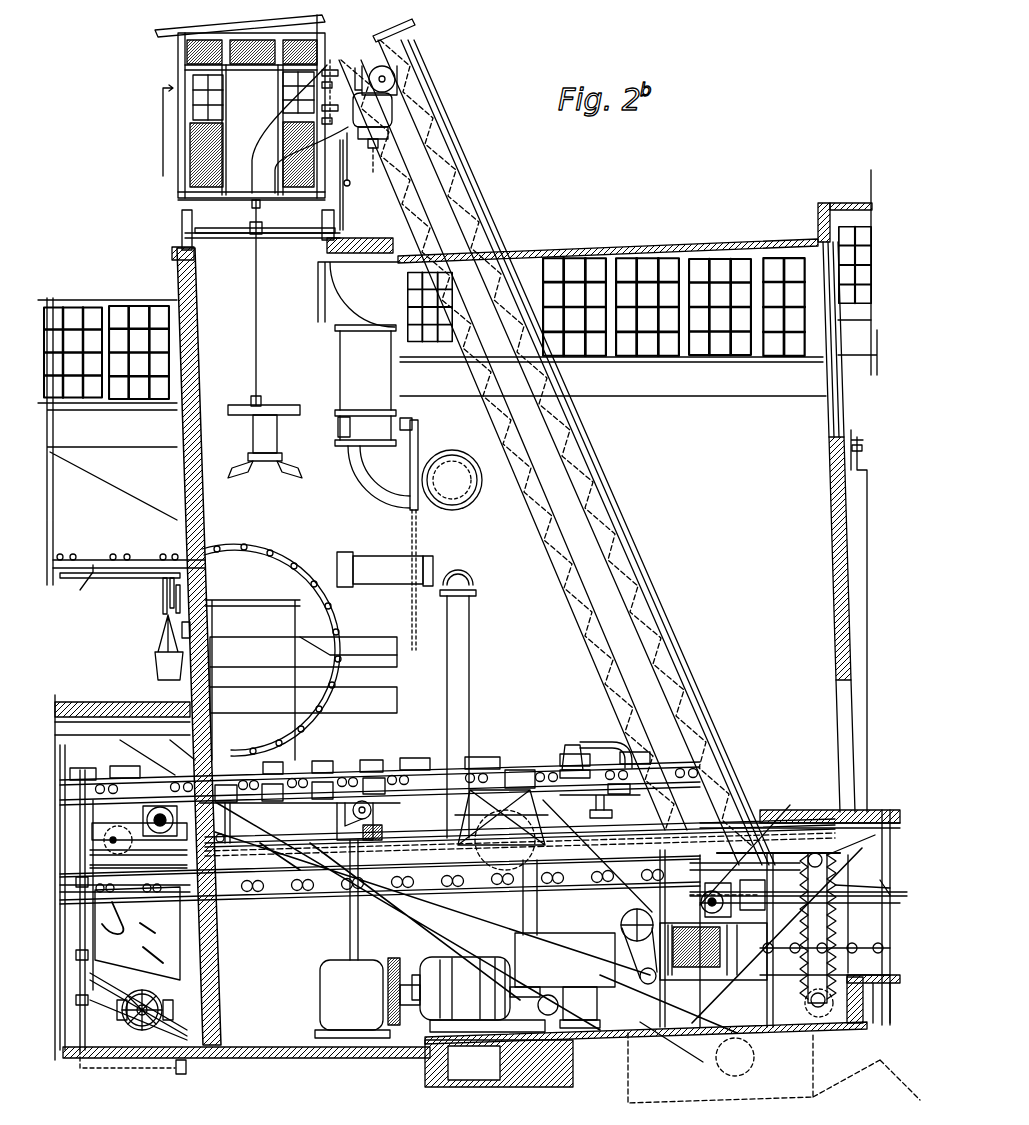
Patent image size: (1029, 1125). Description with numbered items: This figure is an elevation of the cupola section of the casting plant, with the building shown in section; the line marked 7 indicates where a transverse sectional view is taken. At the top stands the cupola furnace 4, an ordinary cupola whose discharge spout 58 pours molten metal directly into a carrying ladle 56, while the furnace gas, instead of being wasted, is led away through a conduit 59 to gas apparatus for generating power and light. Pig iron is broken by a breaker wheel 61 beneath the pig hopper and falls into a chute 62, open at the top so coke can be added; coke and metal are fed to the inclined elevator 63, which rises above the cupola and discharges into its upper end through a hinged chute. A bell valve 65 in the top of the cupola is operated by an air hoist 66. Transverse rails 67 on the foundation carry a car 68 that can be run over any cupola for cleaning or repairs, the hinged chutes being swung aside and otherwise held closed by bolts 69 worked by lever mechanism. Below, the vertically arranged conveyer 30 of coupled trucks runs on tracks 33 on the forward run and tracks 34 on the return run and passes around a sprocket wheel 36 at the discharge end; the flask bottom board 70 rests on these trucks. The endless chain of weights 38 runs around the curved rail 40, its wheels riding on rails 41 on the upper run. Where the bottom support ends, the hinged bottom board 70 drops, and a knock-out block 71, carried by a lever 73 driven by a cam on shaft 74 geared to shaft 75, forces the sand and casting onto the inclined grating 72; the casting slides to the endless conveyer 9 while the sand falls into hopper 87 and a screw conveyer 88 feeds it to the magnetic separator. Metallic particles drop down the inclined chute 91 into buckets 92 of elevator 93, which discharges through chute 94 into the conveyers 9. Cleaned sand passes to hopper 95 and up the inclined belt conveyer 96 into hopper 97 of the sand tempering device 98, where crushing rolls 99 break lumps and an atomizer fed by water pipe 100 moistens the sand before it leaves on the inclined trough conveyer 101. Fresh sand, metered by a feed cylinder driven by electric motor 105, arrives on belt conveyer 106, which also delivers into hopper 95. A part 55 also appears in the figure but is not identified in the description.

The cupola furnace 4 is at (275, 517).
The section line 7 is at (150, 72).
The endless conveyers 9 is at (876, 995).
The vertically arranged conveyer 30 is at (405, 768).
The tracks 33 is at (300, 796).
The tracks 34 is at (447, 858).
The sprocket wheel 36 is at (468, 816).
The endless chain of weights 38 is at (135, 558).
The curved rail 40 is at (271, 650).
The rails 41 is at (120, 585).
The switch plates 55 is at (162, 599).
The carrying ladle 56 is at (157, 657).
The discharge spout 58 is at (190, 641).
The conduit 59 is at (400, 550).
The breaker wheel 61 is at (888, 888).
The chute 62 is at (316, 134).
The inclined elevator 63 is at (340, 92).
The bell valve 65 is at (306, 232).
The air hoist 66 is at (270, 418).
The transverse rails 67 is at (176, 252).
The car 68 is at (193, 164).
The bolts 69 is at (360, 70).
The bottom board 70 is at (449, 782).
The knock-out block 71 is at (568, 745).
The grating 72 is at (602, 828).
The lever 73 is at (612, 744).
The shaft 74 is at (520, 822).
The shaft 75 is at (602, 832).
The hopper 87 is at (666, 890).
The screw conveyer 88 is at (622, 921).
The inclined chute 91 is at (808, 1005).
The buckets 92 is at (870, 975).
The elevator 93 is at (798, 913).
The chute 94 is at (848, 850).
The hopper 95 is at (617, 976).
The inclined endless belt conveyer 96 is at (700, 1072).
The hopper 97 is at (146, 822).
The sand tempering device 98 is at (125, 932).
The crushing rolls 99 is at (92, 833).
The pipe 100 is at (117, 927).
The inclined trough conveyer 101 is at (138, 1006).
The electric motor 105 is at (667, 1031).
The belt conveyer 106 is at (760, 1035).